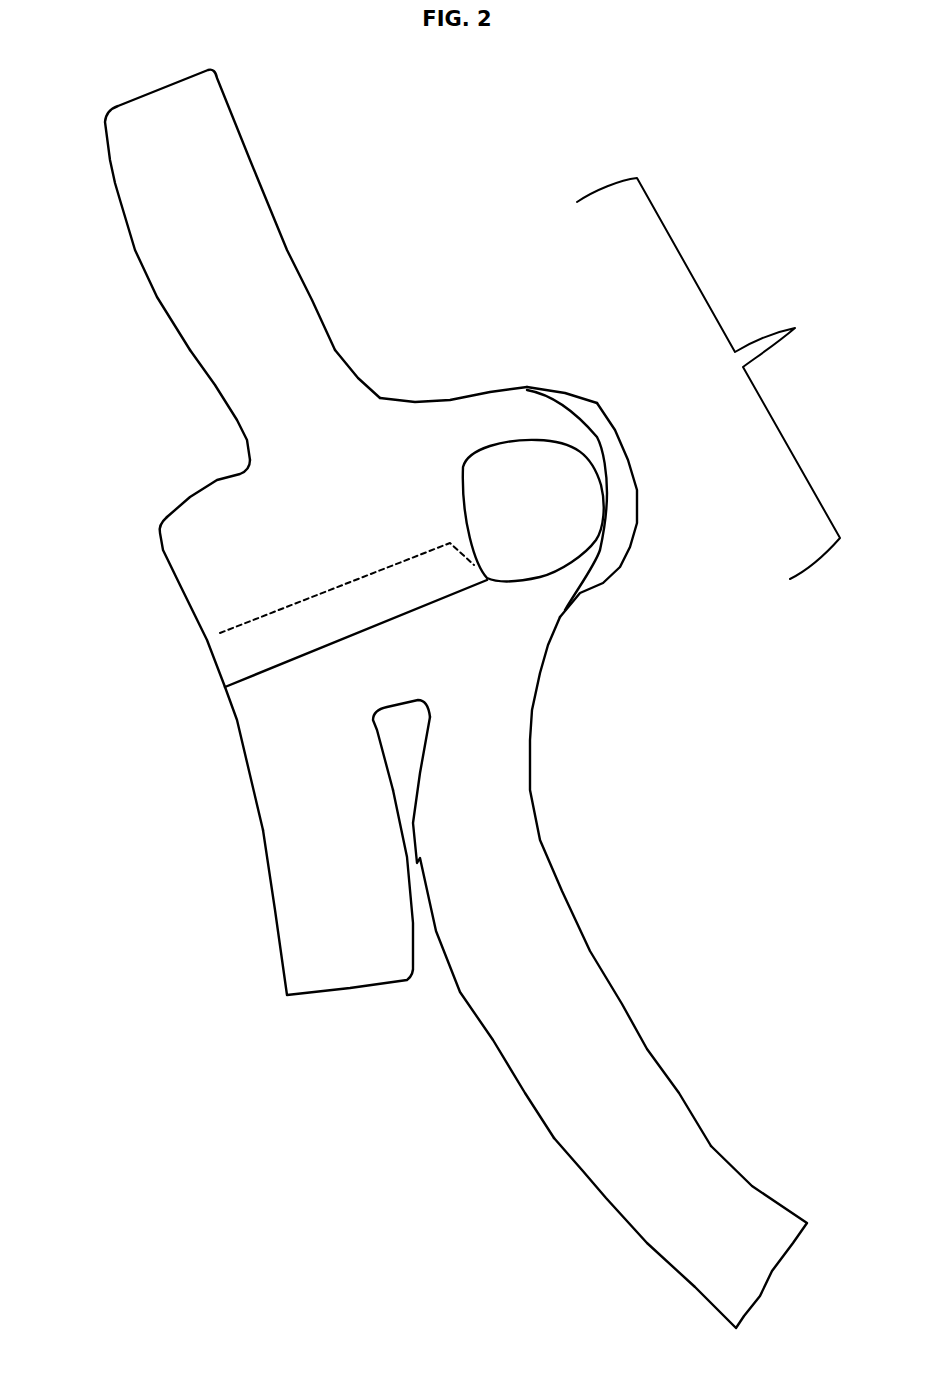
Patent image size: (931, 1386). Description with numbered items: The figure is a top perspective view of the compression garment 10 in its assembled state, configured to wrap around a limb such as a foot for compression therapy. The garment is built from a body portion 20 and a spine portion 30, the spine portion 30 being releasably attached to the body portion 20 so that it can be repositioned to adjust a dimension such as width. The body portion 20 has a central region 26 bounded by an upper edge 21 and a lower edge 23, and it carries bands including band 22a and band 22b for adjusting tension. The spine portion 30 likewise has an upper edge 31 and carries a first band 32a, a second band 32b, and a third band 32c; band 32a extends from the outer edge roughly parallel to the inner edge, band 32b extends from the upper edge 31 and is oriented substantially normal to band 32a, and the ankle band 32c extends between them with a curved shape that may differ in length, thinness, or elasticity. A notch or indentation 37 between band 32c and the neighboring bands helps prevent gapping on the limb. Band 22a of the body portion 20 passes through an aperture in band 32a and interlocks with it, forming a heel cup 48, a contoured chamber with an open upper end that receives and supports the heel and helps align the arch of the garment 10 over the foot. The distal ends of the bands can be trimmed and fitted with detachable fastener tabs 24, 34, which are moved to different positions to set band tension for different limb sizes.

The compression garment 10 is at (803, 325).
The body portion 20 is at (203, 265).
The upper edge of the body portion 21 is at (167, 560).
The band of the body portion 22a is at (485, 410).
The band of the body portion 22b is at (192, 302).
The lower edge of the body portion 23 is at (380, 397).
The fastener tab 24 is at (535, 480).
The central region of the body portion 26 is at (255, 522).
The spine portion 30 is at (610, 972).
The upper edge of the spine portion 31 is at (247, 758).
The first band 32a is at (612, 452).
The second band 32b is at (330, 933).
The third band 32c is at (645, 1196).
The fastener tab 34 is at (255, 645).
The notch or indentation 37 is at (395, 727).
The heel cup 48 is at (607, 374).